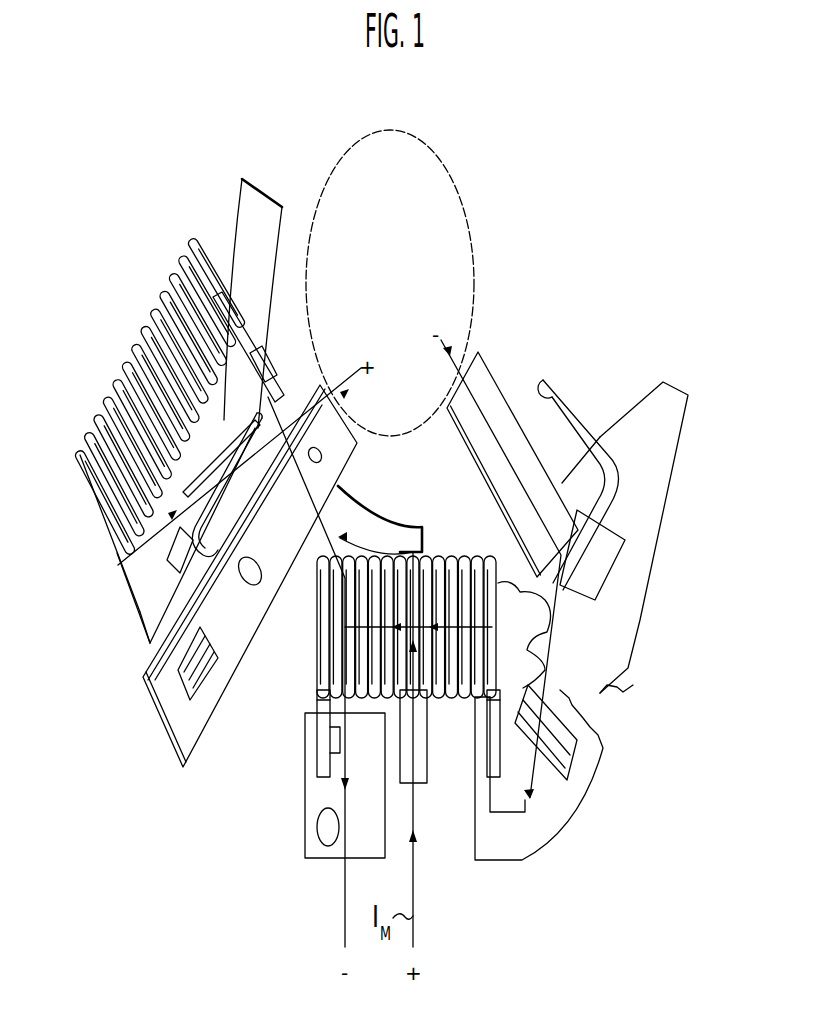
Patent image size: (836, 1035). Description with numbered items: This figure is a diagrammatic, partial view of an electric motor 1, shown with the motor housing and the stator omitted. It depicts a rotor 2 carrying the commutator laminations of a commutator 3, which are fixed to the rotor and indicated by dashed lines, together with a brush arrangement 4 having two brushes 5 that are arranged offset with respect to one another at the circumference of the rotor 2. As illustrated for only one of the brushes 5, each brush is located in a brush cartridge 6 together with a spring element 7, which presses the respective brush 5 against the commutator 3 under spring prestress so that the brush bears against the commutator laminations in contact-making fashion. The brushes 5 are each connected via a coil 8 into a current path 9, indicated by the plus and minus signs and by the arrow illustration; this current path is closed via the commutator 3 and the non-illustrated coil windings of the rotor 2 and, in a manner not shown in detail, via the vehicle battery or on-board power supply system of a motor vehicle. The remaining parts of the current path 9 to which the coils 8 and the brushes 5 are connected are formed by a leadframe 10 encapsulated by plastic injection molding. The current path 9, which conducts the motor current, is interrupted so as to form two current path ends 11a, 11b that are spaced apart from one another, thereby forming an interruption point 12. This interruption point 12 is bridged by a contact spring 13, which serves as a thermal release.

The electric motor 1 is at (520, 150).
The rotor 2 is at (373, 152).
The commutator 3 is at (404, 130).
The brush arrangement 4 is at (207, 748).
The brush 5 is at (312, 397).
The brush cartridge 6 is at (243, 677).
The spring element 7 is at (160, 742).
The coil 8 is at (78, 456).
The current path 9 is at (328, 858).
The leadframe 10 is at (262, 207).
The first current path end 11a is at (643, 587).
The second current path end 11b is at (590, 768).
The interruption point 12 is at (605, 717).
The contact spring 13 is at (573, 680).